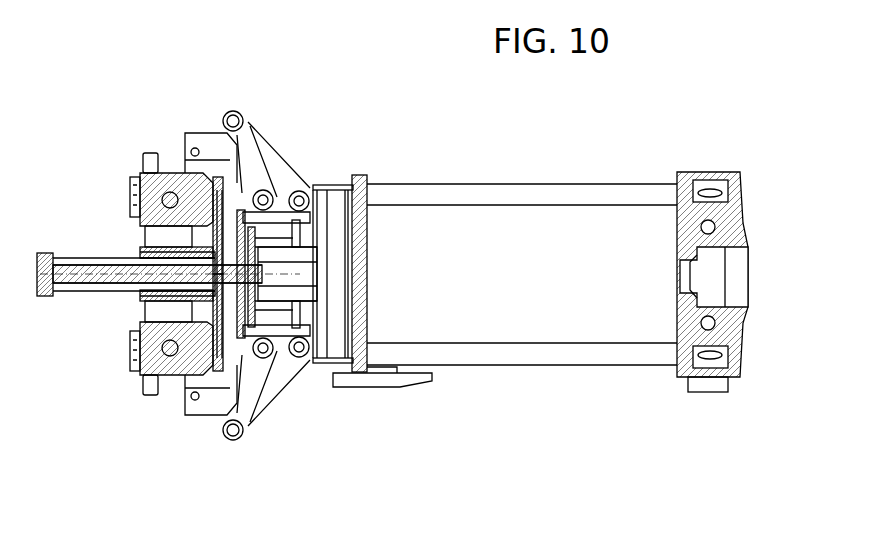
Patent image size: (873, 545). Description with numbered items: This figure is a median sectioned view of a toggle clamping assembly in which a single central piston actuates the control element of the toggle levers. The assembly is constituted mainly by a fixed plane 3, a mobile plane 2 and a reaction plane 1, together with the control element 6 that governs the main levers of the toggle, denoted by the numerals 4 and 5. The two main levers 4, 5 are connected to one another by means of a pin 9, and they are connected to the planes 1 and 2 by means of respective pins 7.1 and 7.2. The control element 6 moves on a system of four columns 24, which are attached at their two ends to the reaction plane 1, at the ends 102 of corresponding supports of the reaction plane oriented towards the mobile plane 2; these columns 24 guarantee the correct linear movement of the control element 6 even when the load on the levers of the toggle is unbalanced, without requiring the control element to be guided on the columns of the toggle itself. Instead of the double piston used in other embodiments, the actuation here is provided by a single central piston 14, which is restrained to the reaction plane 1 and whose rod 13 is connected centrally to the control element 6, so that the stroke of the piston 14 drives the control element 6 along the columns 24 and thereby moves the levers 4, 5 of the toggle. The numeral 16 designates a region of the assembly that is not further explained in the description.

The reaction plane 1 is at (122, 150).
The mobile plane 2 is at (428, 180).
The fixed plane 3 is at (685, 222).
The main lever 4 is at (248, 393).
The main lever 5 is at (267, 148).
The control element 6 is at (180, 148).
The pin 7.1 is at (273, 363).
The pin 7.2 is at (301, 366).
The pin 9 is at (236, 110).
The rod 13 is at (110, 287).
The single central piston 14 is at (88, 258).
The cylinder interior 16 is at (520, 182).
The columns 24 is at (263, 242).
The end of support 102 is at (368, 180).